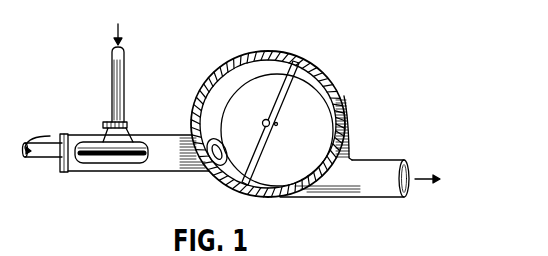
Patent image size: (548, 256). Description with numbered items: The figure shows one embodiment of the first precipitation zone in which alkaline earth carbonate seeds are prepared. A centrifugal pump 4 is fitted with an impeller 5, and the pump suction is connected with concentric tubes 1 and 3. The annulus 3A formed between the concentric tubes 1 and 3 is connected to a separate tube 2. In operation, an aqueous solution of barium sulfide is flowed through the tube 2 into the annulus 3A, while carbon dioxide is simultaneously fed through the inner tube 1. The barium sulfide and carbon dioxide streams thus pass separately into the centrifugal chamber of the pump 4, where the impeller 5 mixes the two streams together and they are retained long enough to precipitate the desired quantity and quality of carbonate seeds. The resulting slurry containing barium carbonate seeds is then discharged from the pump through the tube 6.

The tube 1 is at (45, 158).
The tube 2 is at (111, 73).
The tube 3 is at (169, 135).
The annulus 3A is at (97, 143).
The centrifugal pump 4 is at (346, 103).
The impeller 5 is at (270, 142).
The tube 6 is at (372, 160).